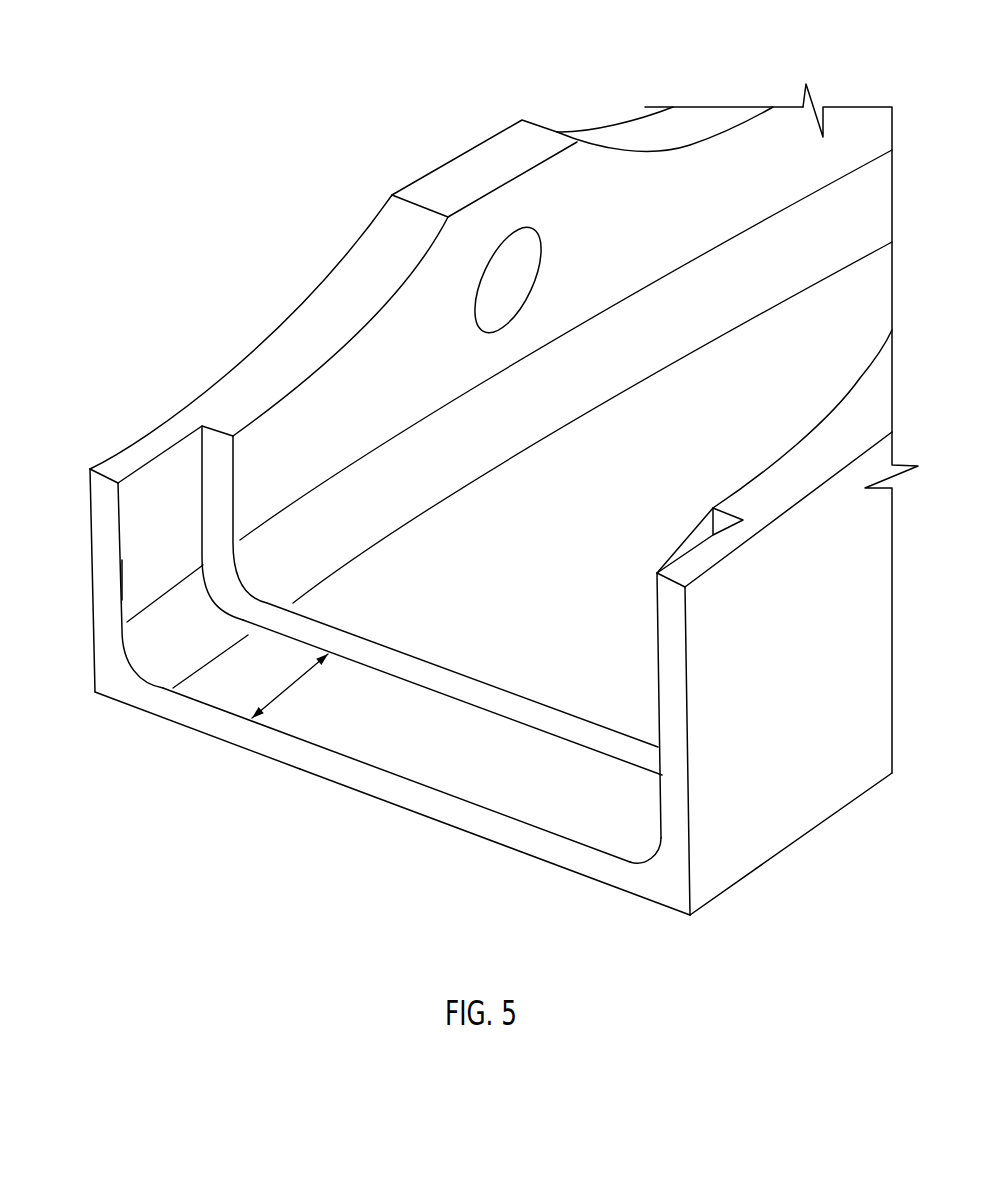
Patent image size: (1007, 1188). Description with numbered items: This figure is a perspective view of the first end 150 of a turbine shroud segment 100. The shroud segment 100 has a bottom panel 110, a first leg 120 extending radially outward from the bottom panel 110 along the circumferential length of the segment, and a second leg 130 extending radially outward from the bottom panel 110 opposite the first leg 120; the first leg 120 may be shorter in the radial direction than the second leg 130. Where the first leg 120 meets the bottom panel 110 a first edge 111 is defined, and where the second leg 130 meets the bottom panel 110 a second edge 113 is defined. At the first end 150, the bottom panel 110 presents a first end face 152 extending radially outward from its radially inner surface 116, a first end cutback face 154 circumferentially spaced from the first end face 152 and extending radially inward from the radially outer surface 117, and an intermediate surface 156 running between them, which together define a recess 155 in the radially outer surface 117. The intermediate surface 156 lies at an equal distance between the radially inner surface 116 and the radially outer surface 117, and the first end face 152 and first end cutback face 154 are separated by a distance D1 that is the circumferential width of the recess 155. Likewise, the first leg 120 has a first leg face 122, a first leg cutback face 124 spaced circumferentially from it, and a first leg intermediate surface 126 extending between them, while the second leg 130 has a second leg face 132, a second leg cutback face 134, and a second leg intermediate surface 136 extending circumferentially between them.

The turbine shroud segment 100 is at (150, 135).
The bottom panel 110 is at (445, 532).
The first edge 111 is at (97, 678).
The second edge 113 is at (783, 850).
The radially inner surface 116 is at (570, 870).
The radially outer surface 117 is at (678, 397).
The first leg 120 is at (210, 372).
The first leg face 122 is at (103, 540).
The first leg cutback face 124 is at (220, 485).
The first leg intermediate surface 126 is at (137, 512).
The second leg 130 is at (853, 573).
The second leg face 132 is at (673, 682).
The second leg cutback face 134 is at (712, 522).
The second leg intermediate surface 136 is at (667, 563).
The first end 150 is at (315, 820).
The first end face 152 is at (167, 710).
The first end cutback face 154 is at (560, 728).
The recess 155 is at (435, 737).
The intermediate surface 156 is at (537, 810).
The distance D1 is at (298, 693).